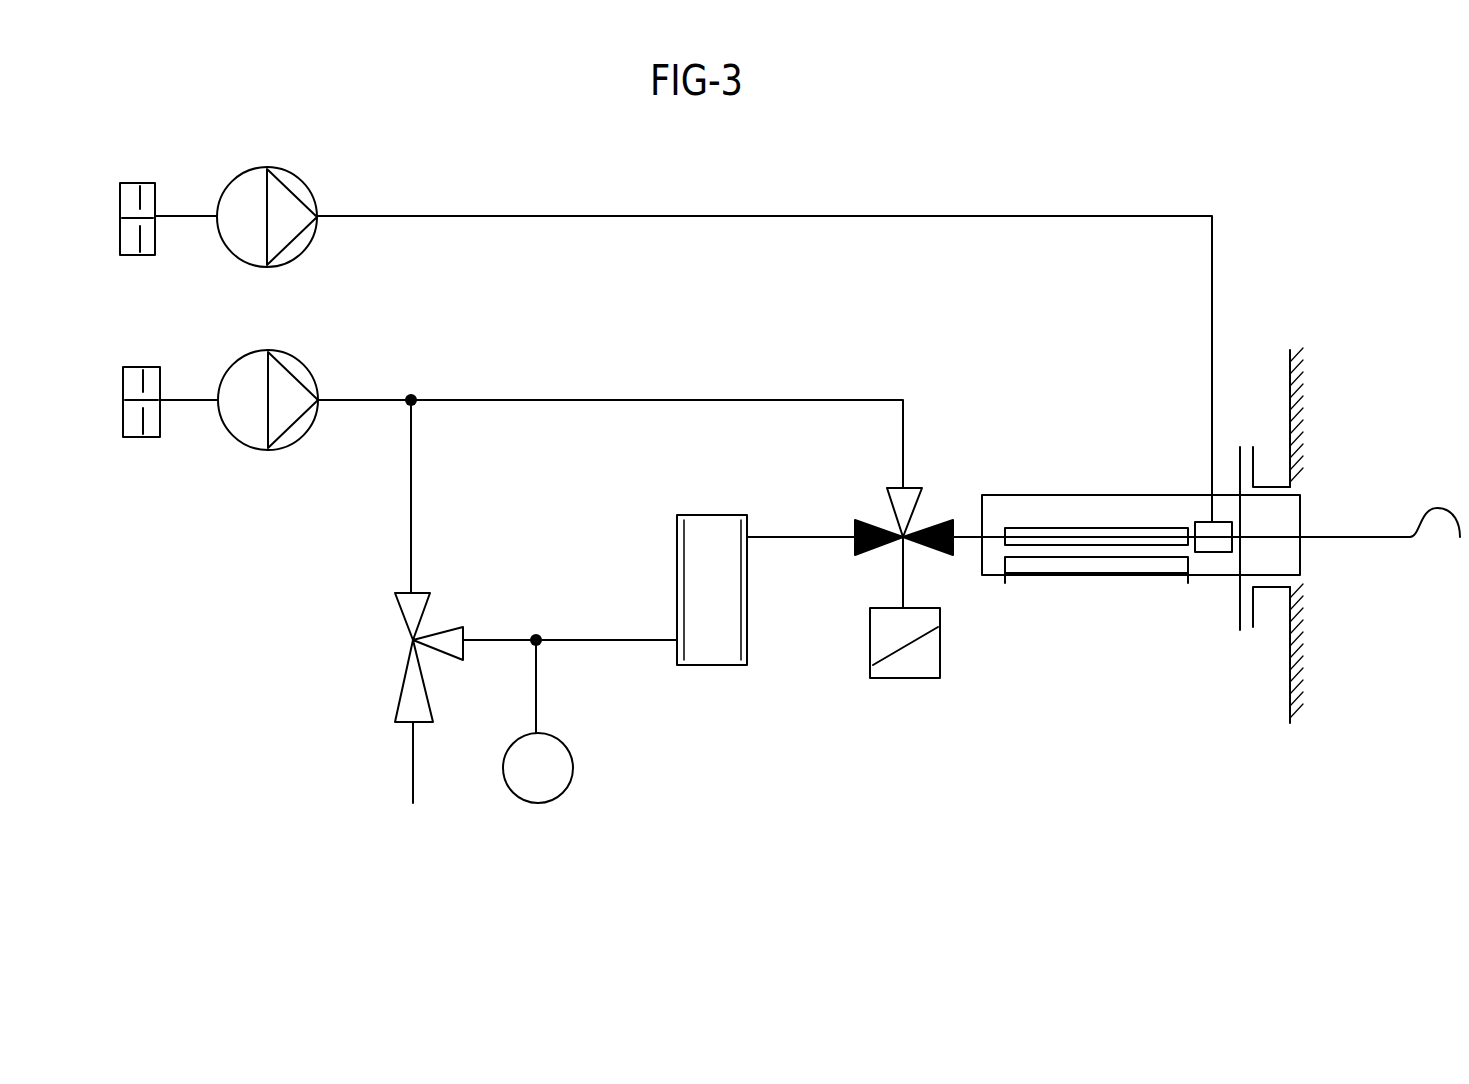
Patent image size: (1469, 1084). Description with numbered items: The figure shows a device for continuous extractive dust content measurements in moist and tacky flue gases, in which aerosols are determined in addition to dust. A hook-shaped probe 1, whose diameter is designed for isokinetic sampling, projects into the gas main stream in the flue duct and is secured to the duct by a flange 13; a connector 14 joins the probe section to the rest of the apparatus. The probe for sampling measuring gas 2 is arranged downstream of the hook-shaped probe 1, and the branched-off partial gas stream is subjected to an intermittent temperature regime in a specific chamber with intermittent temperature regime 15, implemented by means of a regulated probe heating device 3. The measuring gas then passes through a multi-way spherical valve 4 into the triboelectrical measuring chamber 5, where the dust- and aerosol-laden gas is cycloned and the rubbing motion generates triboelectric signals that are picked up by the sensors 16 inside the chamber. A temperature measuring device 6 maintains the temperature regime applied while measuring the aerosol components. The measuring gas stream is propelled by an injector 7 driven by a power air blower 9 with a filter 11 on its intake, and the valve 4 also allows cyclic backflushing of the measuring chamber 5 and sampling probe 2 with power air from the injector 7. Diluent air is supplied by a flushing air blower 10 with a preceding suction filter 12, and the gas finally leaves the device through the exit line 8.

The hook-shaped probe 1 is at (1325, 535).
The probe for sampling measuring gas 2 is at (1030, 495).
The regulated probe heating device 3 is at (1078, 573).
The multi-way spherical valve 4 is at (907, 540).
The triboelectrical measuring chamber 5 is at (677, 530).
The temperature measuring device 6 is at (562, 797).
The injector 7 is at (418, 633).
The gas exit line 8 is at (413, 742).
The power air blower 9 is at (300, 360).
The flushing air blower 10 is at (298, 178).
The reagent reservoir 11 is at (160, 435).
The suction filter 12 is at (157, 250).
The flange 13 is at (1257, 463).
The connector block 14 is at (1203, 522).
The chamber with intermittent temperature regime 15 is at (1075, 527).
The sensors 16 is at (685, 660).